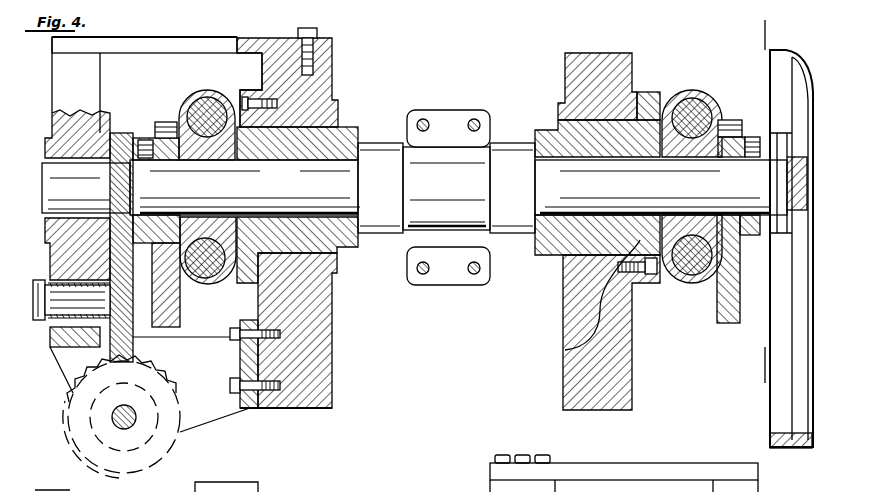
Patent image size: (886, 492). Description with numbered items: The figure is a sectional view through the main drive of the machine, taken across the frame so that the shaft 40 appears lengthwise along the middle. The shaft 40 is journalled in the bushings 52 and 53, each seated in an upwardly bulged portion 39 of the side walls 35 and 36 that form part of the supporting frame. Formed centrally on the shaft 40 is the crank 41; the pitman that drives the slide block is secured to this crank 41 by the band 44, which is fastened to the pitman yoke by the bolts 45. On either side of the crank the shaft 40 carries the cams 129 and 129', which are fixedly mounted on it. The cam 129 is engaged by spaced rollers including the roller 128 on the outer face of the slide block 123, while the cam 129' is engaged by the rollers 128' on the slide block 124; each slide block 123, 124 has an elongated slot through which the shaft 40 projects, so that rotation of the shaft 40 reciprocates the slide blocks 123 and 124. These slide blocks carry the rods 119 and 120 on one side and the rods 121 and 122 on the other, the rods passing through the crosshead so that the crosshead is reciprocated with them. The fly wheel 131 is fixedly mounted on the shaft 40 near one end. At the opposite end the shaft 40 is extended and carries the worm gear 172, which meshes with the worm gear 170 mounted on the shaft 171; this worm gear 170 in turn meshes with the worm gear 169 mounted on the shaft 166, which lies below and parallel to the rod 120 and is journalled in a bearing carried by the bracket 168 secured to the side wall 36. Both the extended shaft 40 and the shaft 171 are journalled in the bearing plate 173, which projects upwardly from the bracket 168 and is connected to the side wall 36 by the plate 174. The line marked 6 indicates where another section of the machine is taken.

The section line 6- 6 is at (763, 33).
The side wall 35 is at (567, 383).
The side wall 36 is at (322, 347).
The upwardly bulged portion 39 is at (325, 71).
The shaft 40 is at (660, 133).
The crank 41 is at (457, 217).
The band 44 is at (482, 137).
The bolts 45 is at (473, 124).
The bushing 52 is at (645, 173).
The bushing 53 is at (348, 127).
The rod 119 is at (207, 97).
The rod 120 is at (190, 283).
The rod 121 is at (697, 103).
The rod 122 is at (690, 280).
The slide block 123 is at (181, 118).
The slide block 124 is at (567, 348).
The roller 128 is at (145, 134).
The rollers 128' is at (739, 128).
The cam 129 is at (183, 309).
The cam 129' is at (721, 317).
The fly wheel 131 is at (770, 437).
The shaft 166 is at (130, 420).
The bracket 168 is at (205, 411).
The worm gear 169 is at (73, 392).
The worm gear 170 is at (143, 355).
The shaft 171 is at (50, 330).
The worm gear 172 is at (48, 128).
The bearing plate 173 is at (85, 72).
The plate 174 is at (203, 43).